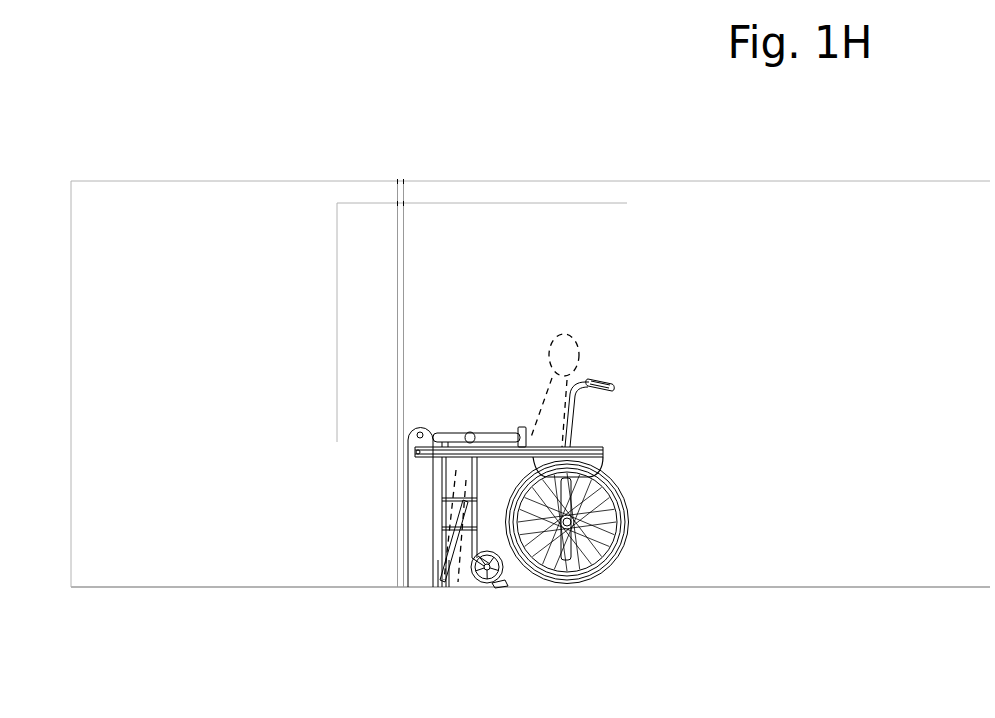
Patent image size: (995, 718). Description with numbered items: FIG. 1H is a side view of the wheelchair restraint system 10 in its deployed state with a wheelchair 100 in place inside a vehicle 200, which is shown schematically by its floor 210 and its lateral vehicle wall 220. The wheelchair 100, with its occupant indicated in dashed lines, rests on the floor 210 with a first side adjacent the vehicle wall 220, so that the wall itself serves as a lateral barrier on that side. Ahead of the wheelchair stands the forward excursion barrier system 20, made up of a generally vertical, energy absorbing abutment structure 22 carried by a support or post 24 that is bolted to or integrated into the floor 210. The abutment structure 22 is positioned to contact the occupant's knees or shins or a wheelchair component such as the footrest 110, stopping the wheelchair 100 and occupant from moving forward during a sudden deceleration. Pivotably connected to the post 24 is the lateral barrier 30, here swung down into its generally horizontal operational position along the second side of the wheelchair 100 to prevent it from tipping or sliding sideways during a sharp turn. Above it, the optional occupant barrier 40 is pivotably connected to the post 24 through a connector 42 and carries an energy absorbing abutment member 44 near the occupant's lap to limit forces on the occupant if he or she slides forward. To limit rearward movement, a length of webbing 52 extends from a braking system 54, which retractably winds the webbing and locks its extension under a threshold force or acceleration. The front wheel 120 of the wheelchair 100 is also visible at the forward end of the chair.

The system 10 is at (383, 423).
The forward excursion barrier system 20 is at (398, 510).
The abutment structure 22 is at (452, 565).
The post 24 is at (420, 568).
The lateral barrier 30 is at (415, 452).
The occupant barrier 40 is at (453, 425).
The connector 42 is at (420, 431).
The abutment member 44 is at (516, 440).
The webbing 52 is at (491, 572).
The braking system 54 is at (468, 577).
The wheelchair 100 is at (593, 438).
The footrest 110 is at (440, 575).
The front wheel 120 is at (492, 583).
The vehicle 200 is at (197, 160).
The floor 210 is at (70, 457).
The vehicle wall 220 is at (185, 558).